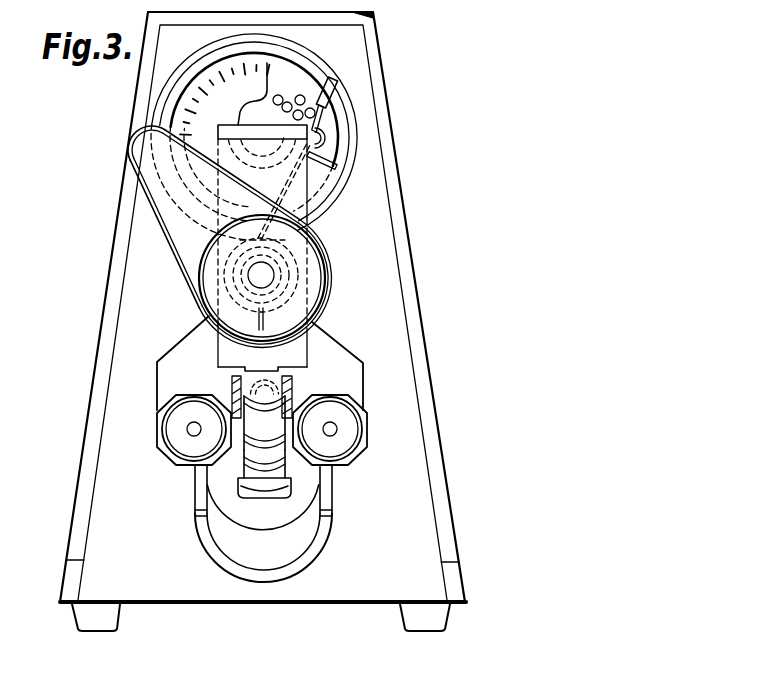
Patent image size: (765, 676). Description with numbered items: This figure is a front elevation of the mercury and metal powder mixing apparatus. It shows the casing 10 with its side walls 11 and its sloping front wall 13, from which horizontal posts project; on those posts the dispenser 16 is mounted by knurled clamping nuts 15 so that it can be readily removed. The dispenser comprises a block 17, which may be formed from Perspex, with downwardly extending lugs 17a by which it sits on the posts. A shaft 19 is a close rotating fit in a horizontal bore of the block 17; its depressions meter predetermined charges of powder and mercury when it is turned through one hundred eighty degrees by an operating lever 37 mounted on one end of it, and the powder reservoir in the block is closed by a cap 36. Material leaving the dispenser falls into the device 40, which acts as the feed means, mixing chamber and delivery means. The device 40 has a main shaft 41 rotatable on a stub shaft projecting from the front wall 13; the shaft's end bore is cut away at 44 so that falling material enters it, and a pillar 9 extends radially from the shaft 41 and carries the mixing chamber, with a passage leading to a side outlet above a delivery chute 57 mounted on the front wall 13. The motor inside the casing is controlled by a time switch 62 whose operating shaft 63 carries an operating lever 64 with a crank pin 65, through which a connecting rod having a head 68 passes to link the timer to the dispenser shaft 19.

The pillar 9 is at (287, 385).
The casing 10 is at (373, 14).
The side walls 11 is at (107, 317).
The sloping front wall 13 is at (373, 208).
The knurled clamping nuts 15 is at (183, 443).
The dispenser 16 is at (232, 118).
The block 17 is at (300, 345).
The downwardly extending lugs 17a is at (158, 381).
The shaft 19 is at (280, 271).
The cap 36 is at (177, 157).
The operating lever 37 is at (142, 147).
The device 40 is at (254, 466).
The main shaft 41 is at (268, 426).
The cut away 44 is at (233, 405).
The delivery chute 57 is at (237, 540).
The time switch 62 is at (323, 175).
The operating shaft 63 is at (178, 201).
The operating lever 64 is at (267, 63).
The crank pin 65 is at (323, 140).
The head 68 is at (333, 95).